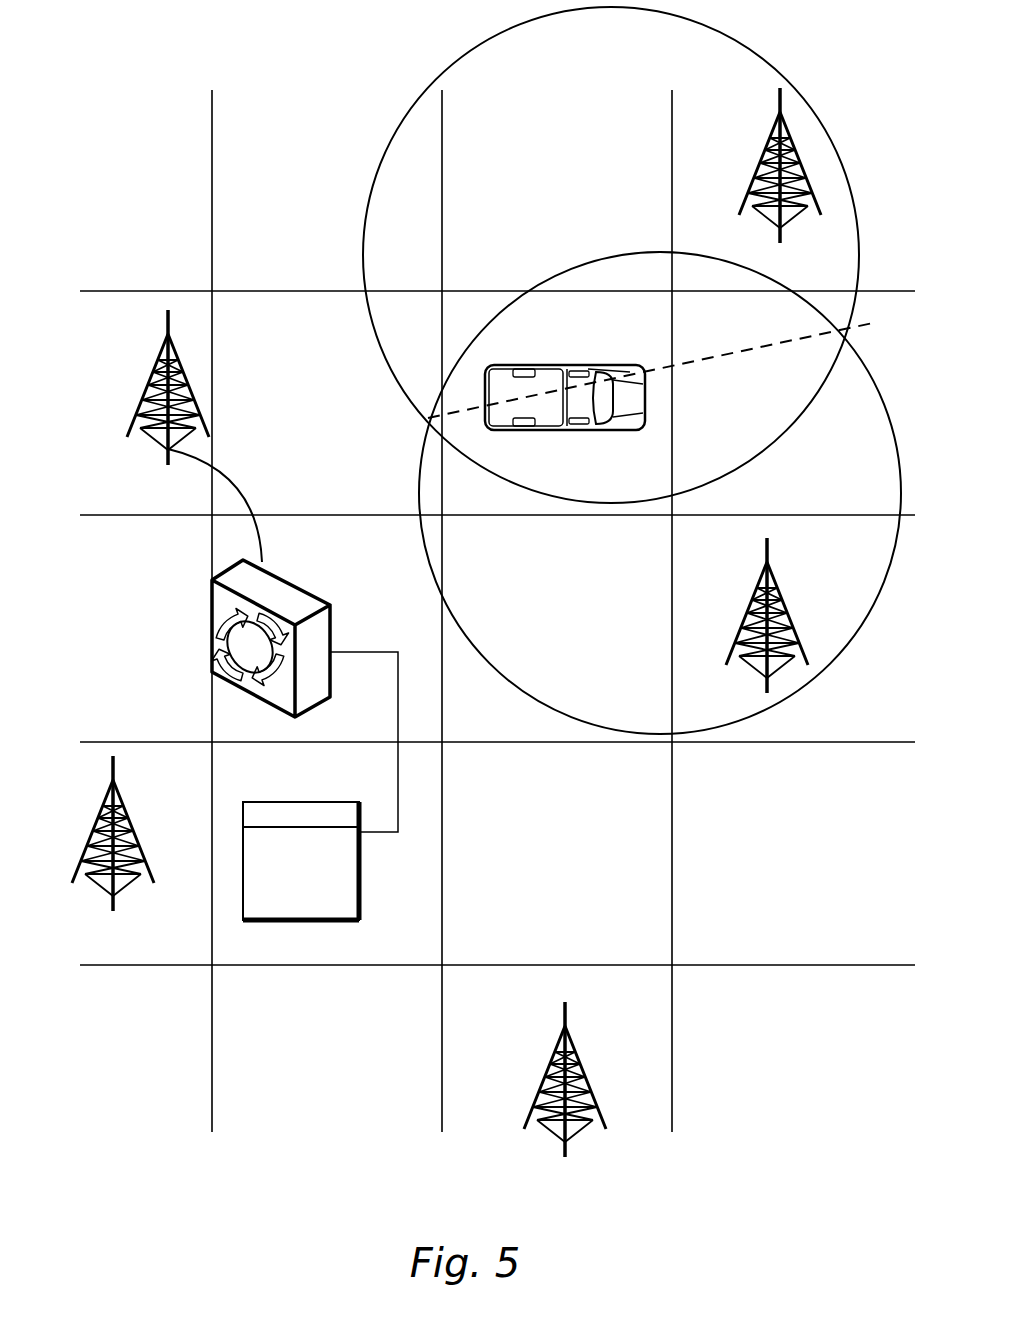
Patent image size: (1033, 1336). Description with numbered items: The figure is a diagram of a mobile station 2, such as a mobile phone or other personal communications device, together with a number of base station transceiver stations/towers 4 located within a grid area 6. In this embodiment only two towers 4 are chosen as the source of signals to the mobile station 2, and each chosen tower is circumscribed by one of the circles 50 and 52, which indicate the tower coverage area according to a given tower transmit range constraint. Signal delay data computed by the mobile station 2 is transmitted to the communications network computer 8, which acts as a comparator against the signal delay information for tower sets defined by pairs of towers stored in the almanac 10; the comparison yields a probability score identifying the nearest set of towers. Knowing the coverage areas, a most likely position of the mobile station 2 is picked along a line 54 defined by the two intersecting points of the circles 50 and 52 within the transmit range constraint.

The mobile station 2 is at (600, 431).
The base station transceiver stations/towers 4 is at (767, 160).
The grid area 6 is at (212, 1045).
The communications network computer 8 is at (304, 612).
The almanac 10 is at (288, 881).
The circle 50 is at (512, 682).
The circle 52 is at (373, 335).
The line 54 is at (732, 356).